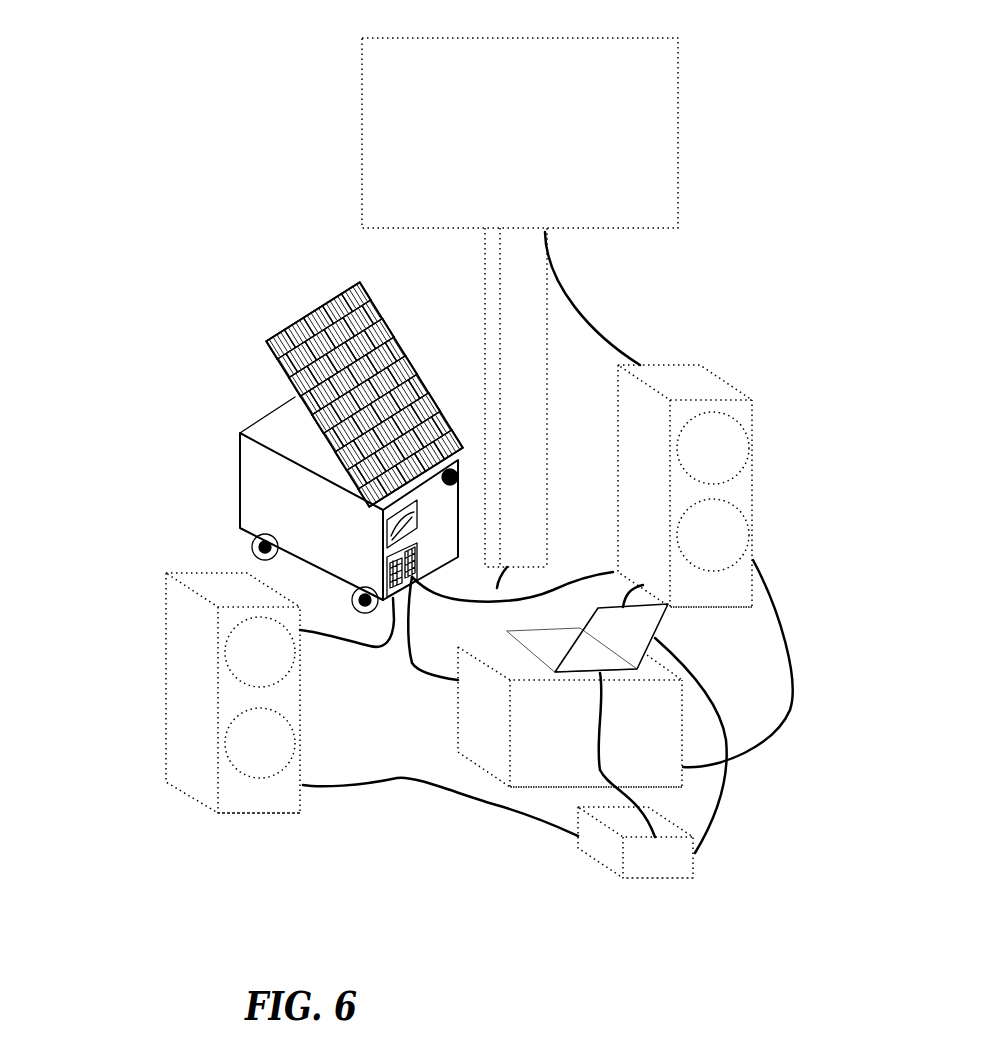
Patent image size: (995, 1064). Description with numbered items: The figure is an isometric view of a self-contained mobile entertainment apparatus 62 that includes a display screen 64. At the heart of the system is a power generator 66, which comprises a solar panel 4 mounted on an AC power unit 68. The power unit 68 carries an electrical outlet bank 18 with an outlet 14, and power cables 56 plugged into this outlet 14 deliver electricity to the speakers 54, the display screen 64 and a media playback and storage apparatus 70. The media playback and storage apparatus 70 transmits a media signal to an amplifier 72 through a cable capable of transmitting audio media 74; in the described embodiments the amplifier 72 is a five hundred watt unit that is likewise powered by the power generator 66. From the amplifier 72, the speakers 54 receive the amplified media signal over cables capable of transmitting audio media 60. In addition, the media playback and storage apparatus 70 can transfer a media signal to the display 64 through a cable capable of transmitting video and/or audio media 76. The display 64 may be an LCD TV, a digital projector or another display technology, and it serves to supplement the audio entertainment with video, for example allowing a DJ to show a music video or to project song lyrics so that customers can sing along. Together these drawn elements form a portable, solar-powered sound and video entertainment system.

The self-contained mobile entertainment apparatus 62 is at (809, 198).
The display screen 64 is at (520, 302).
The power generator 66 is at (252, 358).
The solar panel 4 is at (393, 332).
The AC power unit 68 is at (240, 475).
The electrical outlet bank 18 is at (382, 587).
The outlet 14 is at (413, 565).
The speakers 54 is at (177, 690).
The power cables 56 is at (577, 574).
The media playback and storage apparatus 70 is at (570, 695).
The cable capable of transmitting audio media 74 is at (600, 745).
The cables capable of transmitting audio media 60 is at (397, 780).
The cable capable of transmitting video and/or audio media 76 is at (793, 693).
The amplifier 72 is at (635, 842).